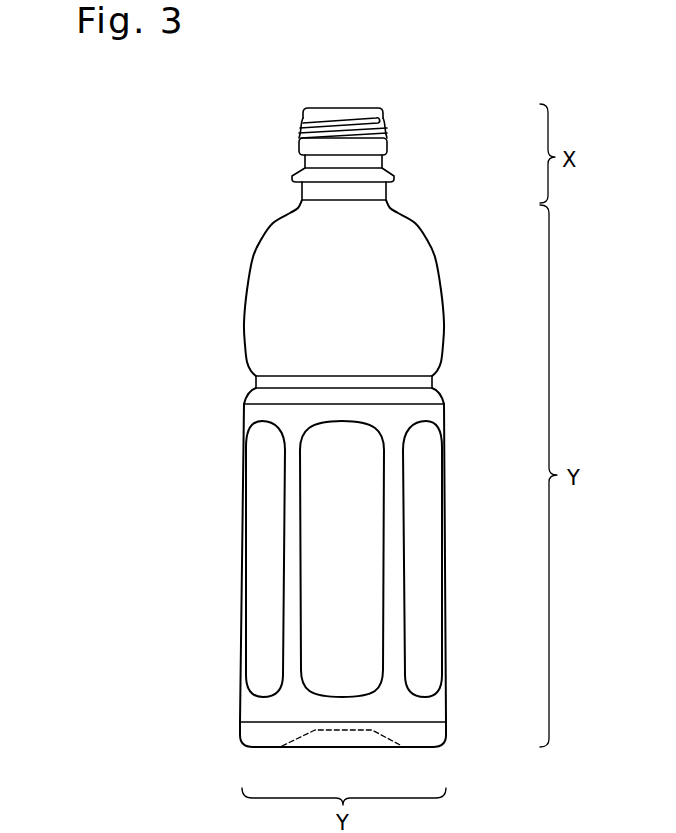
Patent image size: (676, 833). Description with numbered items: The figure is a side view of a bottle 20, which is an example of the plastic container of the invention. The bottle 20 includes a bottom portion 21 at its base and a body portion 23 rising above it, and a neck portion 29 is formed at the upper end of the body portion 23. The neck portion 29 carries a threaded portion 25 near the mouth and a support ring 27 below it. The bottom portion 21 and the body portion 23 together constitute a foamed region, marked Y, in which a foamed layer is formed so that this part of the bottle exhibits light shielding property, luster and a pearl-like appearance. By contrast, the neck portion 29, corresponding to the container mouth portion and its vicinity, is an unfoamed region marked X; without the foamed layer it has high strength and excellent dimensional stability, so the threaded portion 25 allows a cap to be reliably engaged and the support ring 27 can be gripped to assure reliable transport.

The bottle 20 is at (210, 615).
The bottom portion 21 is at (306, 748).
The body portion 23 is at (244, 357).
The threaded portion 25 is at (302, 123).
The support ring 27 is at (293, 178).
The neck portion 29 is at (402, 151).